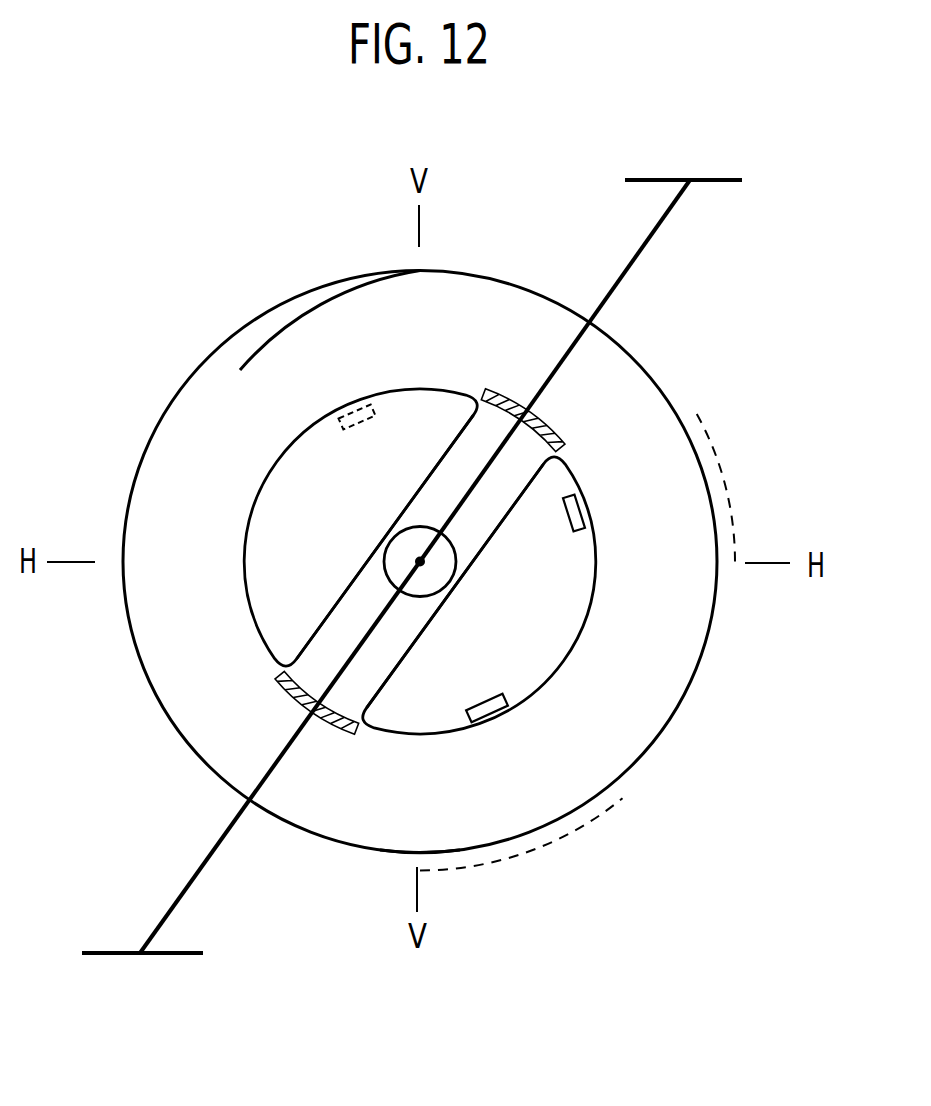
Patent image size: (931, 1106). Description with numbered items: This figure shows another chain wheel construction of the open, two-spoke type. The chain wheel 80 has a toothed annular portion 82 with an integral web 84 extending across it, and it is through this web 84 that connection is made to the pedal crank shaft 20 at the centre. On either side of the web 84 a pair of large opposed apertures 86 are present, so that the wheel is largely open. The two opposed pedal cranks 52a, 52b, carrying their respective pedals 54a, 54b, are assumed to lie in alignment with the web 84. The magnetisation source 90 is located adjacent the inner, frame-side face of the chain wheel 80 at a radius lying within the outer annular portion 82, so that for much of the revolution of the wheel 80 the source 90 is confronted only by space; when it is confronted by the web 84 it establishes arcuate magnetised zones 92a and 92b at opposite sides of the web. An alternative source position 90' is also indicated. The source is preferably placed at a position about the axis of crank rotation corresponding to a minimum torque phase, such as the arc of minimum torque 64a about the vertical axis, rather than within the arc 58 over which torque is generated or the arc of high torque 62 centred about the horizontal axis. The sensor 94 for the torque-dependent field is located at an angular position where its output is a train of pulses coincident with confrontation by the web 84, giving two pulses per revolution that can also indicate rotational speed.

The pedal crank shaft 20 is at (383, 547).
The pedal crank 52a is at (640, 253).
The pedal crank 52b is at (210, 853).
The pedal 54a is at (714, 178).
The pedal 54b is at (182, 951).
The arc of torque generation 58 is at (417, 860).
The arc of high torque 62 is at (708, 436).
The arc of minimum torque 64a is at (570, 837).
The chain wheel 80 is at (193, 417).
The toothed annular portion 82 is at (295, 333).
The web 84 is at (481, 552).
The apertures 86 is at (243, 562).
The magnetisation source 90 is at (483, 674).
The alternate sensor position 90' is at (368, 462).
The arcuate magnetised zone 92a is at (555, 445).
The arcuate magnetised zone 92b is at (346, 722).
The sensor 94 is at (565, 510).